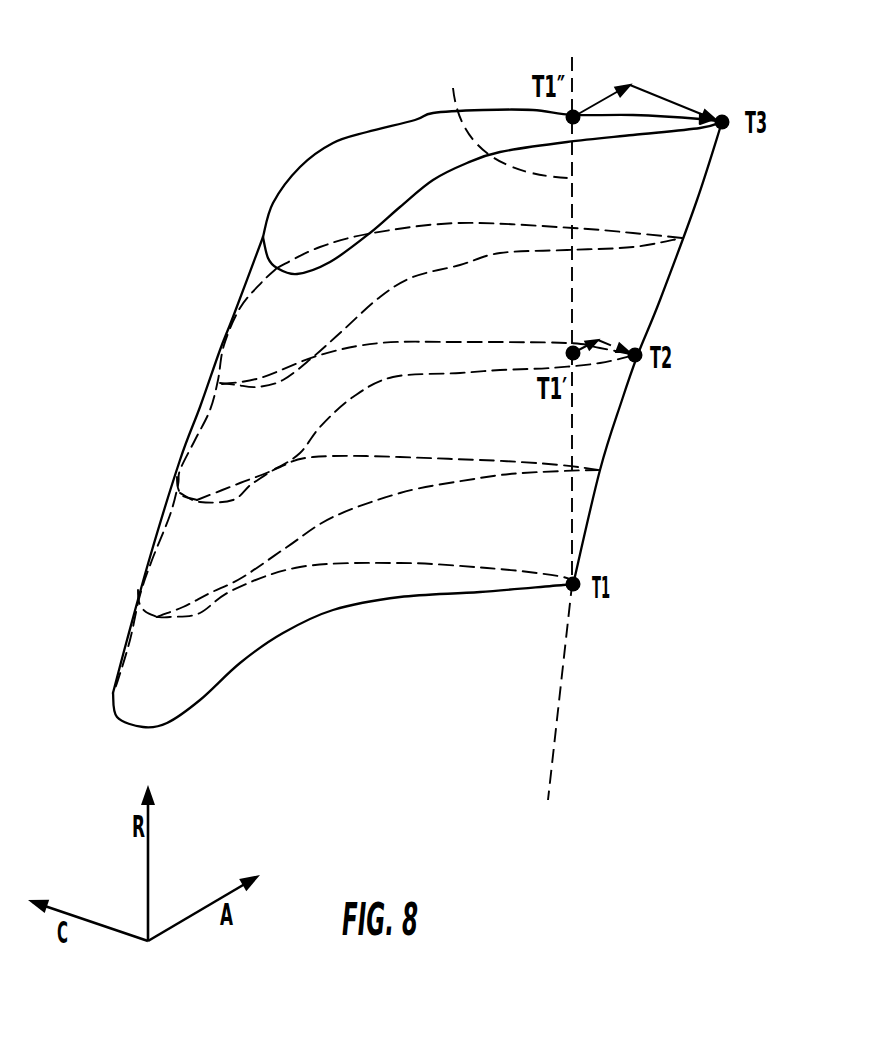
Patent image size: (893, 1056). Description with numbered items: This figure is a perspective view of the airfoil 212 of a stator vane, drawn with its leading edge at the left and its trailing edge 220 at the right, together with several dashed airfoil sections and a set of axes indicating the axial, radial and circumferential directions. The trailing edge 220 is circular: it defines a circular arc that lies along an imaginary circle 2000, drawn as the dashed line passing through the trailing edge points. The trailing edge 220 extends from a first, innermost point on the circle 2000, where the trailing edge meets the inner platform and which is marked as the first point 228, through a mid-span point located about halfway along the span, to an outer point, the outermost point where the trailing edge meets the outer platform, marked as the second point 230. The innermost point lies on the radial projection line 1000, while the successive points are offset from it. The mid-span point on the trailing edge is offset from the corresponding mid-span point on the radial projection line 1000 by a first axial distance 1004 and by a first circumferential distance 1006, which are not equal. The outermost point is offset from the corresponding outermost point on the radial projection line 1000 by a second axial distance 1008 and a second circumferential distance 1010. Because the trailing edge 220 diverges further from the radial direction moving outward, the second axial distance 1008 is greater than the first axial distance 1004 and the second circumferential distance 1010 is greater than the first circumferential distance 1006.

The airfoil 212 is at (424, 419).
The trailing edge 220 is at (614, 430).
The first point 228 is at (577, 595).
The second point 230 is at (722, 132).
The radial projection line 1000 is at (497, 118).
The first axial distance 1004 is at (584, 342).
The first circumferential distance 1006 is at (612, 350).
The second axial distance 1008 is at (604, 88).
The second circumferential distance 1010 is at (672, 98).
The imaginary circle 2000 is at (557, 685).